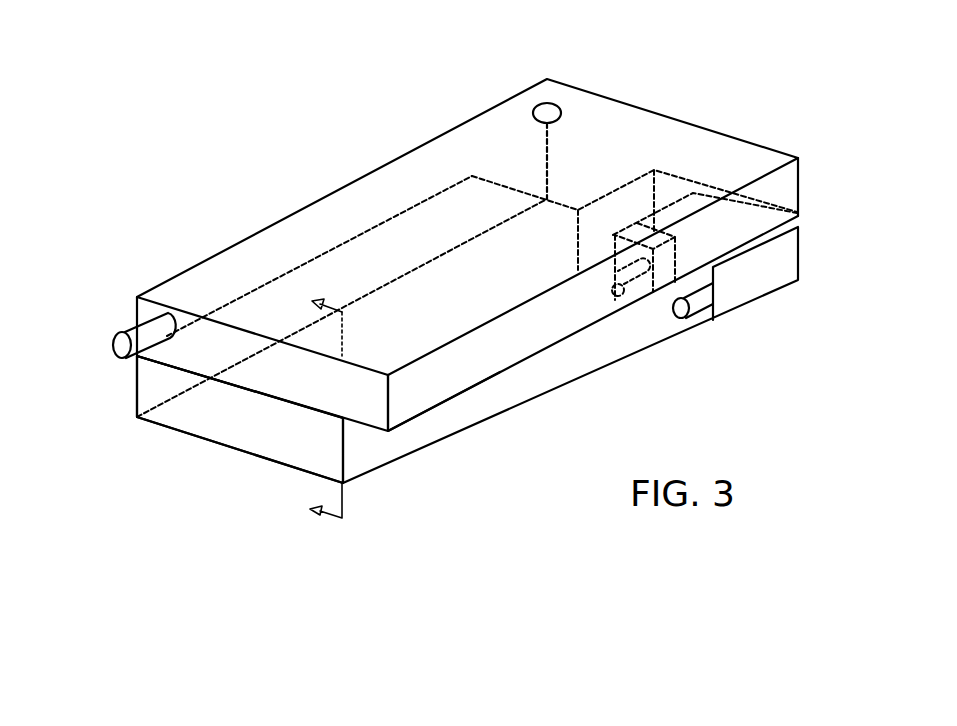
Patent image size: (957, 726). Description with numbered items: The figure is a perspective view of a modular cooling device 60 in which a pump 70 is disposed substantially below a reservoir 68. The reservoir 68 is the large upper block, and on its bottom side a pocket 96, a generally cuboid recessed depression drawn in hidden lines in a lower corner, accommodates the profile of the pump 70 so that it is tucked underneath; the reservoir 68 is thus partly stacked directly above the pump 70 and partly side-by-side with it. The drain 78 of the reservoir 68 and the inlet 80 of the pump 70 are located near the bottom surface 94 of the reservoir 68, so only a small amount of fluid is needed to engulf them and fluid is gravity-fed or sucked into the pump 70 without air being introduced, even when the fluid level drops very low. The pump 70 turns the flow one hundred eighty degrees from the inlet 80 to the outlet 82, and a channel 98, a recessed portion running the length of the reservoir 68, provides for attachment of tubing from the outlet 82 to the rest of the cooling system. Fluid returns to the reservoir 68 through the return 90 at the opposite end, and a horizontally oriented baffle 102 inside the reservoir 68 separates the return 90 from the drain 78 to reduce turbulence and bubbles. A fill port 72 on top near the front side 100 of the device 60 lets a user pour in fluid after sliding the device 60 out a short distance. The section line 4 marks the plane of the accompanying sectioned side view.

The modular cooling device 60 is at (666, 39).
The fill port 72 is at (557, 104).
The front side 100 is at (661, 116).
The pocket 96 is at (695, 180).
The reservoir 68 is at (801, 188).
The baffle 102 is at (427, 210).
The inlet 80 is at (617, 278).
The drain 78 is at (615, 300).
The outlet 82 is at (695, 311).
The pump 70 is at (800, 280).
The return 90 is at (116, 327).
The bottom surface 94 is at (282, 446).
The channel 98 is at (374, 432).
The section line 4- 4 is at (327, 413).